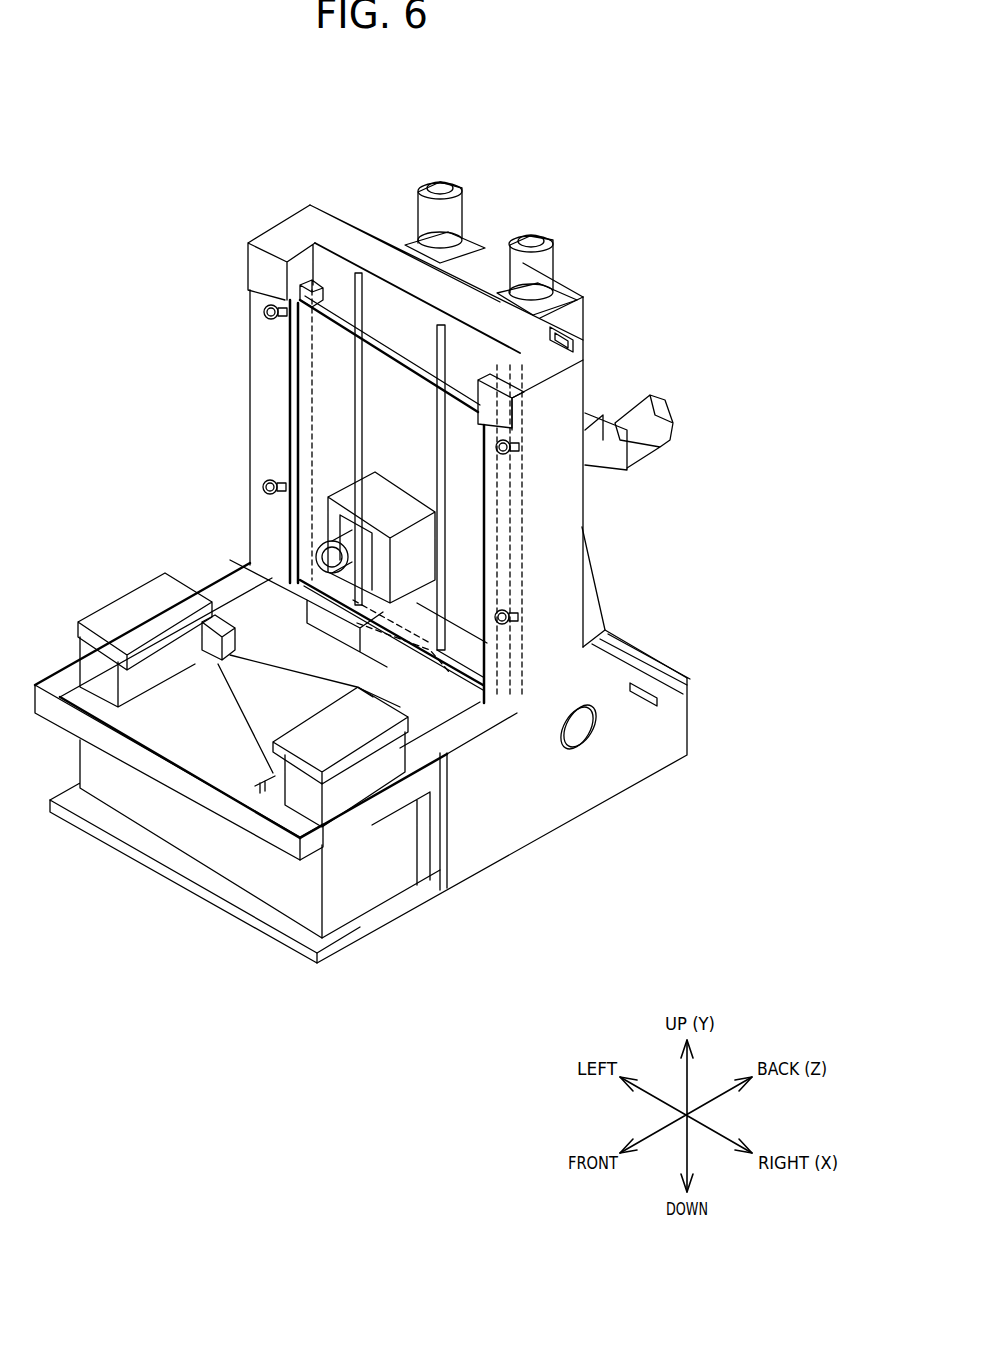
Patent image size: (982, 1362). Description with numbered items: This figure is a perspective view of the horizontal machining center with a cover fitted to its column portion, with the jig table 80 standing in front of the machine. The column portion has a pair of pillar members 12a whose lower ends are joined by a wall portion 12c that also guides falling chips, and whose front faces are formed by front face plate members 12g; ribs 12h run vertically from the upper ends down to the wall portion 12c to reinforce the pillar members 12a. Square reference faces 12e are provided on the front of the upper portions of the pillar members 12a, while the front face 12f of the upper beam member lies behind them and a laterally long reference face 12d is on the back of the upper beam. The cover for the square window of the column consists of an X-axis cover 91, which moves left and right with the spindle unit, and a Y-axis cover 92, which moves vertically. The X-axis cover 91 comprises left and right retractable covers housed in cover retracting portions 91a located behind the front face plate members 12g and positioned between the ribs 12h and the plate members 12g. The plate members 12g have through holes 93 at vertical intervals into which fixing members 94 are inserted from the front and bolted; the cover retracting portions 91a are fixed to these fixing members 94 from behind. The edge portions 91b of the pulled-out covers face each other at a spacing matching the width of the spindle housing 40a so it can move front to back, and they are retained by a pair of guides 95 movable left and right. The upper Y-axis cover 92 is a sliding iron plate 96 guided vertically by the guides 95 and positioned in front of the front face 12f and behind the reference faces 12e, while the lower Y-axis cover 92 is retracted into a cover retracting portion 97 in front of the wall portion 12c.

The jig table 80 is at (107, 557).
The pillar member 12a is at (267, 418).
The wall portion 12c is at (440, 757).
The reference face 12d is at (483, 325).
The reference face 12e is at (257, 263).
The front face of upper beam member 12f is at (560, 290).
The front face plate member 12g is at (268, 445).
The rib 12h is at (300, 218).
The spindle housing 40a is at (373, 507).
The X-axis cover 91 is at (332, 350).
The cover retracting portion 91a is at (297, 292).
The edge portion 91b is at (350, 407).
The Y-axis cover 92 is at (422, 194).
The through hole 93 is at (270, 322).
The fixing member 94 is at (267, 308).
The guide 95 is at (378, 313).
The iron plate 96 is at (443, 270).
The cover retracting portion 97 is at (450, 713).